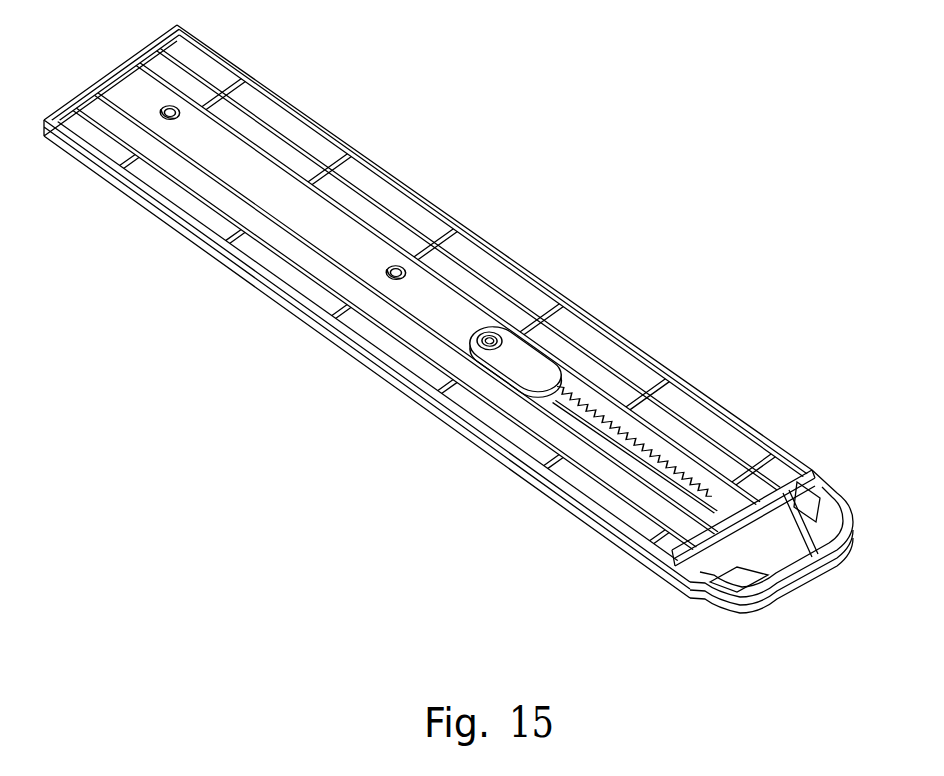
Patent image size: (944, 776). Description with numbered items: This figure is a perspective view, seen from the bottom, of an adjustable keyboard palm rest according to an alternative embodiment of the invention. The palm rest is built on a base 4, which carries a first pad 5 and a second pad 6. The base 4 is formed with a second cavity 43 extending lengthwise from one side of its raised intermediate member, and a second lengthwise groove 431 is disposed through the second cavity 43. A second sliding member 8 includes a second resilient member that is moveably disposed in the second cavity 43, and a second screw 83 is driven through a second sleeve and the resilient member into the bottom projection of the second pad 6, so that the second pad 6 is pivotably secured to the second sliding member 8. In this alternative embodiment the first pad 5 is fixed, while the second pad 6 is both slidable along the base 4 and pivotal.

The base 4 is at (373, 182).
The first pad 5 is at (124, 202).
The second pad 6 is at (828, 474).
The second sliding member 8 is at (530, 359).
The second screw 83 is at (506, 339).
The second cavity 43 is at (694, 464).
The second lengthwise groove 431 is at (639, 446).